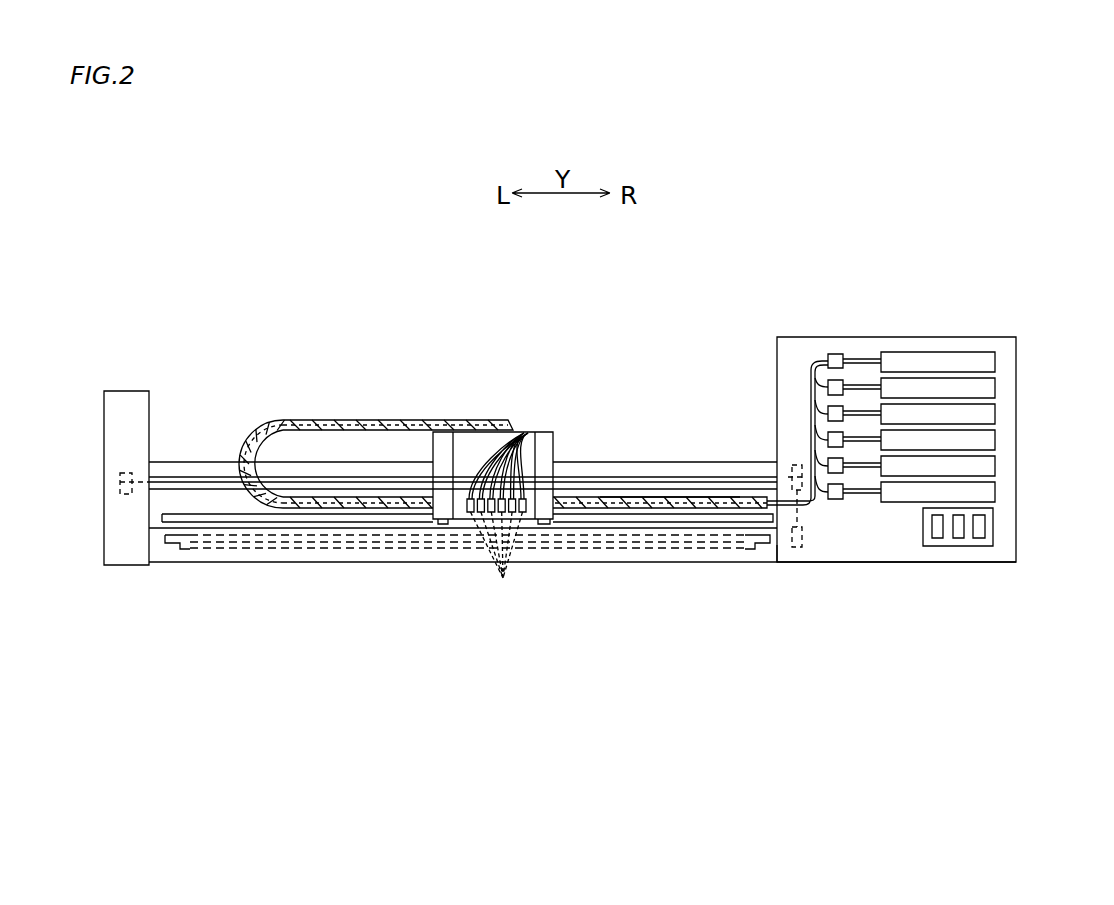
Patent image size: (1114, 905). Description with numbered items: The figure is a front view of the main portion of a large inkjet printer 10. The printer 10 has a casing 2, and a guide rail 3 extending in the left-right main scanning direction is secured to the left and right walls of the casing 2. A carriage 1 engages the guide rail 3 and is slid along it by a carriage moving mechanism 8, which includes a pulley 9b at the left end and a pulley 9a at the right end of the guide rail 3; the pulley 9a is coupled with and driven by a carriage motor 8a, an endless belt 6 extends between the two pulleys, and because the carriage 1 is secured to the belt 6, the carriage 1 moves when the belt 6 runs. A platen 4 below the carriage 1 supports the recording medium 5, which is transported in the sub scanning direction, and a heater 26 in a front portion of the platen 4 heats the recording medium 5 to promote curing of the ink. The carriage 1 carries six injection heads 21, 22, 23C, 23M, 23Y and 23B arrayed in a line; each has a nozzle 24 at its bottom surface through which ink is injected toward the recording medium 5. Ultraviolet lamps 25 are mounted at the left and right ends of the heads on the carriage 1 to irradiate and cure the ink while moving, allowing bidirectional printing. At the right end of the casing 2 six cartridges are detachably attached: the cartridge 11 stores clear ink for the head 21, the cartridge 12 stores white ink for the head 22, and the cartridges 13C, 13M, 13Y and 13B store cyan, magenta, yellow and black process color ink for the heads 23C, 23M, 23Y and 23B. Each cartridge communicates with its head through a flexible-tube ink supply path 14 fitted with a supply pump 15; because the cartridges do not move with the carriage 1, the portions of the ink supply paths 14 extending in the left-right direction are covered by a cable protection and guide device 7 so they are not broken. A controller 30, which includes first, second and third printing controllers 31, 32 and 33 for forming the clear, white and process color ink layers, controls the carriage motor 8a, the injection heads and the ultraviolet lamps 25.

The carriage 1 is at (592, 528).
The casing 2 is at (966, 326).
The guide rail 3 is at (709, 462).
The platen 4 is at (702, 562).
The recording medium 5 is at (298, 548).
The endless belt 6 is at (677, 477).
The cable protection and guide device 7 is at (282, 424).
The carriage moving mechanism 8 is at (794, 550).
The carriage motor 8a is at (803, 547).
The pulley 9a is at (794, 465).
The pulley 9b is at (130, 474).
The inkjet printer 10 is at (910, 232).
The cartridge 11 is at (995, 487).
The cartridge 12 is at (995, 461).
The cartridge 13B is at (995, 435).
The cartridge 13C is at (995, 357).
The cartridge 13M is at (995, 383).
The cartridge 13Y is at (995, 409).
The ink supply path 14 is at (642, 497).
The supply pump 15 is at (846, 499).
The injection head 21 is at (433, 452).
The injection head 22 is at (470, 495).
The injection head 23B is at (492, 470).
The injection head 23C is at (553, 457).
The injection head 23M is at (537, 460).
The injection head 23Y is at (515, 480).
The nozzle 24 is at (506, 588).
The ultraviolet lamp 25 is at (547, 525).
The heater 26 is at (184, 549).
The controller 30 is at (988, 546).
The first printing controller 31 is at (937, 538).
The second printing controller 32 is at (958, 538).
The third printing controller 33 is at (979, 538).